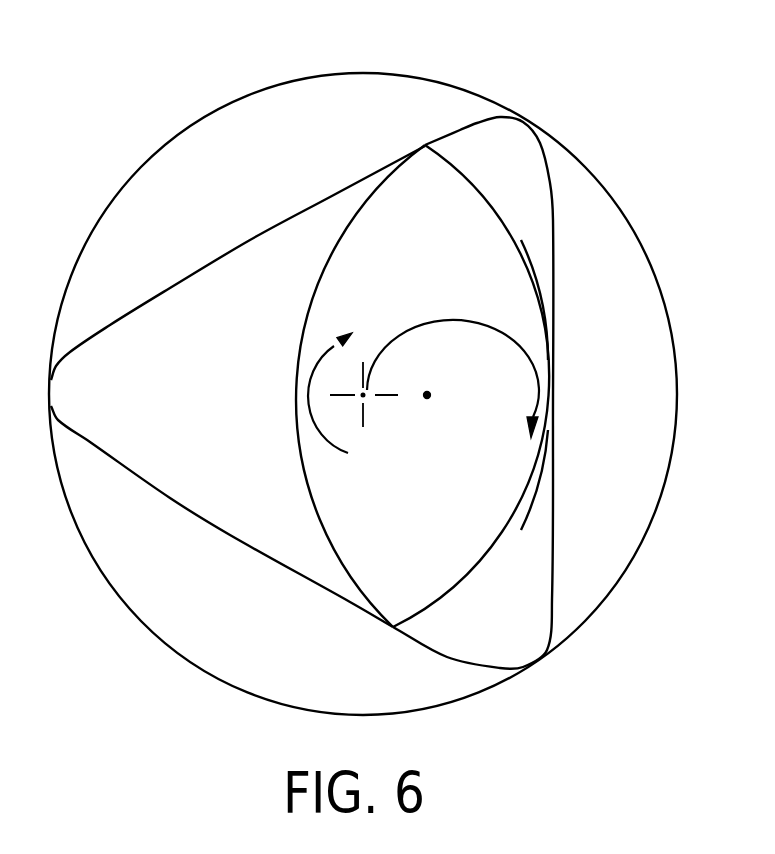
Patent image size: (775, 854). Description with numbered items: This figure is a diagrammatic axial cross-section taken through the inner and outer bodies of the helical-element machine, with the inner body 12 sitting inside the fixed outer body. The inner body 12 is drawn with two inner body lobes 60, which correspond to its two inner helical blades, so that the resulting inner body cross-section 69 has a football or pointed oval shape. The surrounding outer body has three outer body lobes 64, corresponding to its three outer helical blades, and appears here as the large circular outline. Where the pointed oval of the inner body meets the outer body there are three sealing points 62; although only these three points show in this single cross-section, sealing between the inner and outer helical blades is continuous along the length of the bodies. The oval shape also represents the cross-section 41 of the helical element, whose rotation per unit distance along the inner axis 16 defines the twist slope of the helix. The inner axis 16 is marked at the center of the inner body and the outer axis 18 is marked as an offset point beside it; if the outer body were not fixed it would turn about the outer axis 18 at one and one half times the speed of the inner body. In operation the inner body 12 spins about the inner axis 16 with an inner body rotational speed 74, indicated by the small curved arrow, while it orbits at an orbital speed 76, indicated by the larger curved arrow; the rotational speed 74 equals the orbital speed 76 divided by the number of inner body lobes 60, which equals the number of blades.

The inner body 12 is at (328, 488).
The inner axis 16 is at (365, 397).
The outer axis 18 is at (428, 396).
The cross-section of the helical element 41 is at (536, 296).
The inner body lobes 60 is at (478, 196).
The sealing points 62 is at (427, 143).
The outer body lobes 64 is at (193, 128).
The inner body cross-section 69 is at (533, 474).
The inner body rotational speed 74 is at (296, 407).
The orbital speed 76 is at (449, 322).